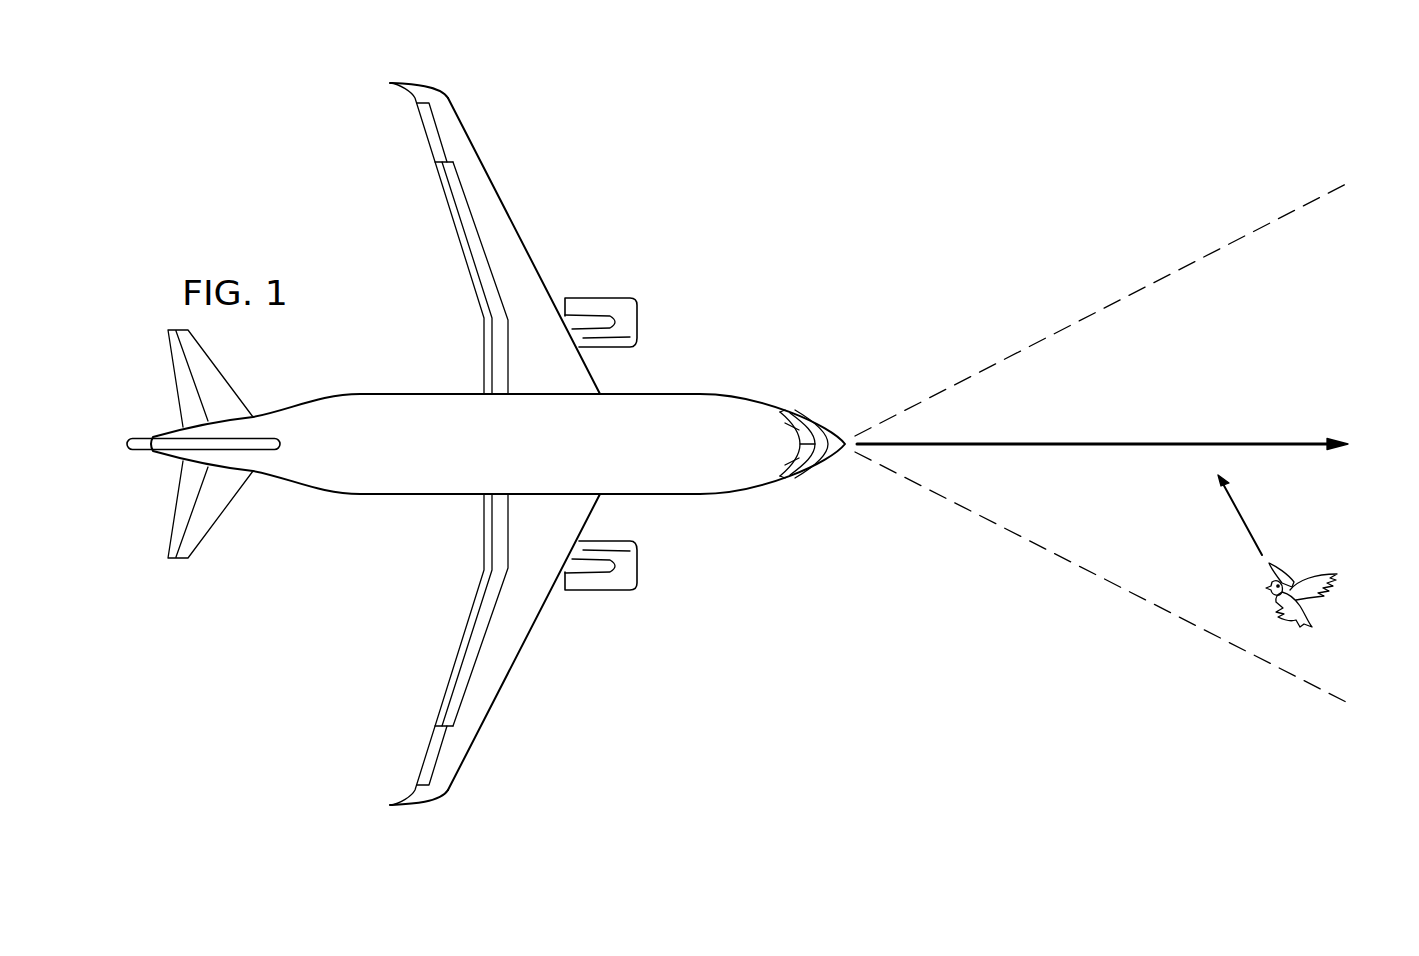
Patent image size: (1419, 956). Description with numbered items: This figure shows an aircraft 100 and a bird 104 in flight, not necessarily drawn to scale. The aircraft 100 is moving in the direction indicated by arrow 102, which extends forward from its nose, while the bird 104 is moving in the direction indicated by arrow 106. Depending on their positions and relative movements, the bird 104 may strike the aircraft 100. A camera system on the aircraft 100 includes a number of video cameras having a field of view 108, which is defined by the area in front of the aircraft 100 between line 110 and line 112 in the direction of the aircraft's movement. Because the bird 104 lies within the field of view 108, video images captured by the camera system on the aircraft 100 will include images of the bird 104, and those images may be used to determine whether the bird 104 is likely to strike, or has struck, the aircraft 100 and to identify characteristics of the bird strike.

The aircraft 100 is at (376, 390).
The arrow 102 is at (1092, 442).
The bird 104 is at (1325, 603).
The arrow 106 is at (1245, 518).
The field of view 108 is at (1363, 317).
The line 110 is at (1089, 313).
The line 112 is at (1087, 571).